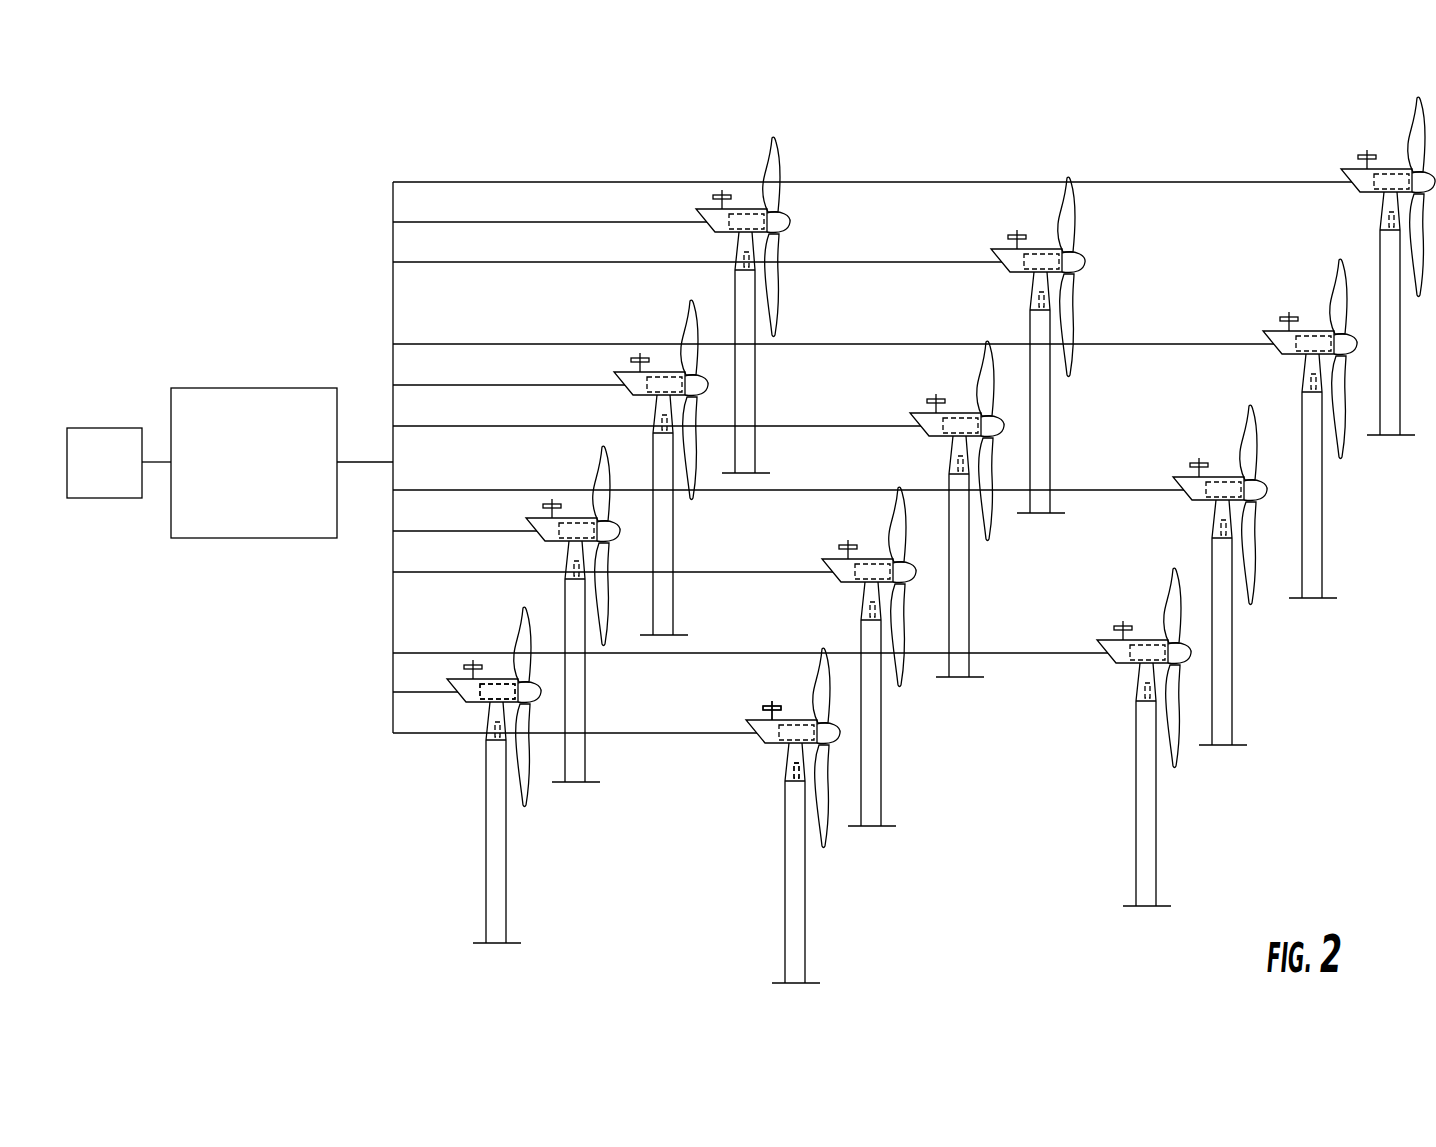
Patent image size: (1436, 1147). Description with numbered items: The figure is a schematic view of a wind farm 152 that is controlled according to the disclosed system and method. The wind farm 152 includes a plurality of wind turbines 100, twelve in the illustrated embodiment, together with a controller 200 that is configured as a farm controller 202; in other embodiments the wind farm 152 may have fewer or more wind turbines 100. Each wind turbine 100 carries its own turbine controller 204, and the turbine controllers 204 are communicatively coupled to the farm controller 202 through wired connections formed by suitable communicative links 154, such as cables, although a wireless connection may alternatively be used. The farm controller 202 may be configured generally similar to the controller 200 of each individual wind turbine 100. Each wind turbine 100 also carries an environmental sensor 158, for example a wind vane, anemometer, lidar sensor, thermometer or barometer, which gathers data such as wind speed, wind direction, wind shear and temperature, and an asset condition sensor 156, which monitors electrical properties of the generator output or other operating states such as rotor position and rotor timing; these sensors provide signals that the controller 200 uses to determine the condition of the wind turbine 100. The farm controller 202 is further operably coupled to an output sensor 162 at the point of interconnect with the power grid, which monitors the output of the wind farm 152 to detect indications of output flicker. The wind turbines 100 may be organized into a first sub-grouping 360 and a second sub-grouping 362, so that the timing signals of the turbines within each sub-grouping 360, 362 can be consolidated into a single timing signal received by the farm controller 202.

The wind turbine 100 is at (603, 717).
The wind farm 152 is at (300, 233).
The communicative link 154 is at (555, 344).
The asset condition sensor 156 is at (782, 770).
The environmental sensor 158 is at (762, 707).
The output sensor 162 is at (112, 490).
The controller 200 is at (282, 427).
The farm controller 202 is at (220, 402).
The turbine controller 204 is at (498, 680).
The first sub-grouping 360 is at (1401, 106).
The second sub-grouping 362 is at (756, 143).